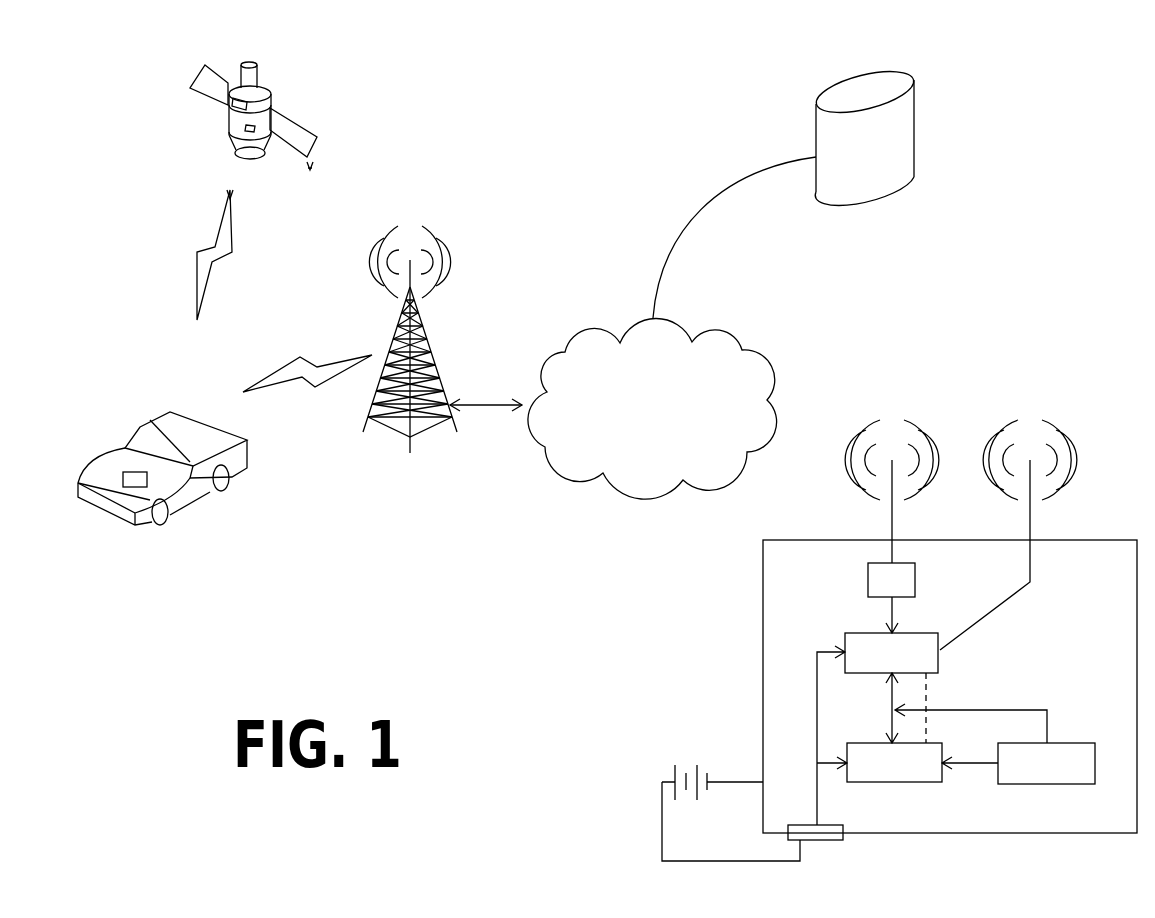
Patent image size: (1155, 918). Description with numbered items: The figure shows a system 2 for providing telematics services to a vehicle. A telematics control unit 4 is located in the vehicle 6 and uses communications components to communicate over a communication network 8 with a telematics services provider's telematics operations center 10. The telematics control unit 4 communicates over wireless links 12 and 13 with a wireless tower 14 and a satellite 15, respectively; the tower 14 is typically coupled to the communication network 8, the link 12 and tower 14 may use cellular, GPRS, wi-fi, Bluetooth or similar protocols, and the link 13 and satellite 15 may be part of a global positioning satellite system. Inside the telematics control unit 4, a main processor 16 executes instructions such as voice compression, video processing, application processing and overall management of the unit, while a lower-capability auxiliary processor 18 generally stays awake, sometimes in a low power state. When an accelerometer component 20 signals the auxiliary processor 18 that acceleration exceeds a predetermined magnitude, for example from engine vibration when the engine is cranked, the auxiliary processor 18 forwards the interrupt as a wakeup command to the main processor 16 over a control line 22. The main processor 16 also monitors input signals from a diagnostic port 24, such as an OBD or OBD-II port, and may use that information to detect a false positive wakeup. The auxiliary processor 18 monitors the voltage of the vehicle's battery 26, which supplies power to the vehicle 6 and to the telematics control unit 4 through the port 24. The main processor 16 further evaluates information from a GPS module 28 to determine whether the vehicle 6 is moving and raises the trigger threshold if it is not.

The system 2 is at (1008, 213).
The telematics control unit 4 is at (135, 487).
The vehicle 6 is at (249, 440).
The communication network 8 is at (737, 334).
The telematics operations center 10 is at (847, 195).
The wireless link 12 is at (280, 384).
The wireless link 13 is at (232, 225).
The wireless tower 14 is at (418, 437).
The satellite 15 is at (318, 137).
The main processor 16 is at (916, 633).
The auxiliary processor 18 is at (905, 782).
The accelerometer component 20 is at (1015, 784).
The control line 22 is at (926, 697).
The diagnostic port 24 is at (843, 840).
The battery 26 is at (661, 744).
The GPS module 28 is at (915, 580).